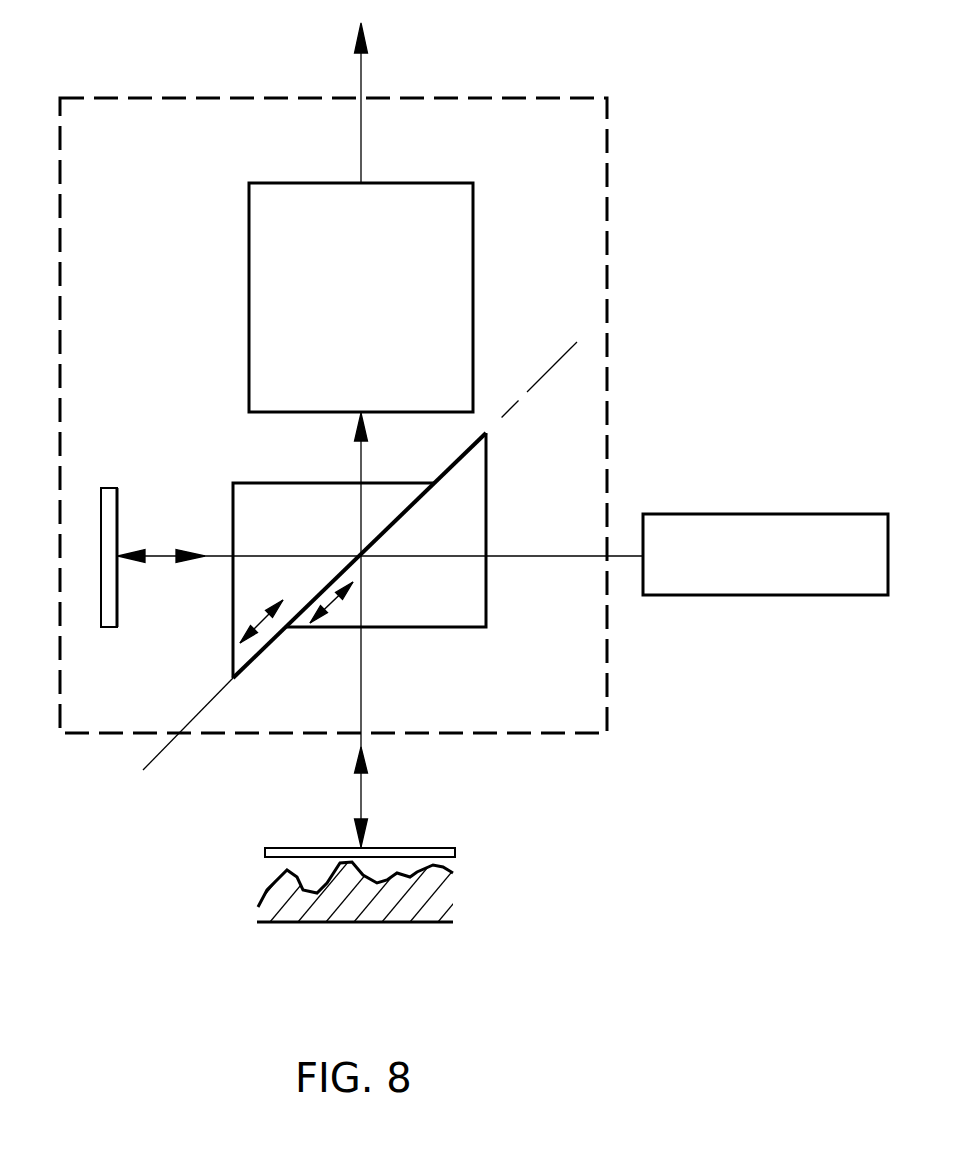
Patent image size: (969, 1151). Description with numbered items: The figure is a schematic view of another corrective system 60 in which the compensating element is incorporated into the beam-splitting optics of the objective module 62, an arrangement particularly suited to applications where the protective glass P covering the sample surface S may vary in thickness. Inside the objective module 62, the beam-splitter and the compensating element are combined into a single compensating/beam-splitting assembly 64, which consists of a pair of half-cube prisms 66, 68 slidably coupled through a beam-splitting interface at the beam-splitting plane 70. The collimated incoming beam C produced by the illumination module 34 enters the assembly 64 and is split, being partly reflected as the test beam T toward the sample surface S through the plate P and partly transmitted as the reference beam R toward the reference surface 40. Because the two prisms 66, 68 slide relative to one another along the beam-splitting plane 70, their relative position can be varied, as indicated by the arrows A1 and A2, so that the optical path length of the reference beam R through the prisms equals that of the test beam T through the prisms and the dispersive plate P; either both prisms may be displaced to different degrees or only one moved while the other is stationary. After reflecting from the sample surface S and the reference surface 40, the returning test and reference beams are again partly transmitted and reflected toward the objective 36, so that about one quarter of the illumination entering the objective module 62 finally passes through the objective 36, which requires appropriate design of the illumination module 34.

The corrective system 60 is at (637, 106).
The objective module 62 is at (608, 230).
The objective 36 is at (253, 218).
The reference surface 40 is at (112, 488).
The reference beam R is at (227, 553).
The prism 66 is at (265, 495).
The prism 68 is at (457, 598).
The compensating/beam-splitting assembly 64 is at (472, 430).
The beam-splitting plane 70 is at (550, 370).
The arrow A1 is at (257, 617).
The arrow A2 is at (327, 605).
The incoming beam C is at (615, 556).
The illumination module 34 is at (715, 513).
The test beam T is at (360, 792).
The protective glass P is at (410, 847).
The sample surface S is at (437, 863).